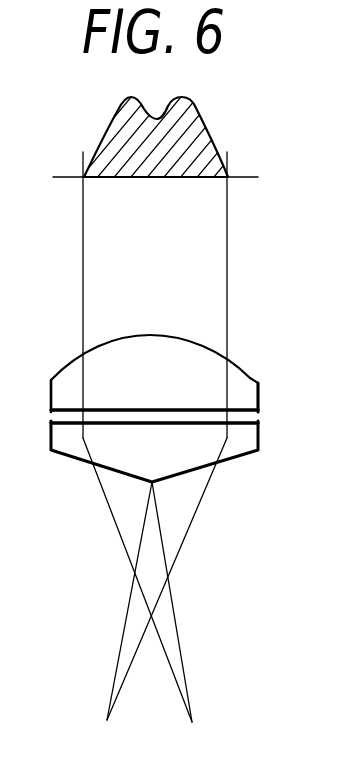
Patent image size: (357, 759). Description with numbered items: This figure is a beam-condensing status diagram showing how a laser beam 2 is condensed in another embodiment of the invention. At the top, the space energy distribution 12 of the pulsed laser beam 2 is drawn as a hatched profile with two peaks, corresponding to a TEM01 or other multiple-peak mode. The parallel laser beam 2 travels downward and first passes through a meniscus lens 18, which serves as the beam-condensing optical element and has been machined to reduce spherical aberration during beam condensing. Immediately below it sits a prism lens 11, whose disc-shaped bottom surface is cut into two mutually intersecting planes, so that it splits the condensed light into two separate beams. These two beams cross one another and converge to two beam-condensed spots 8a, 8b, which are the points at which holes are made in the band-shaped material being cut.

The space energy distribution 12 is at (212, 132).
The laser beam 2 is at (213, 253).
The meniscus lens 18 is at (242, 380).
The prism lens 11 is at (248, 440).
The beam-condensed spot 8a is at (105, 720).
The beam-condensed spot 8b is at (195, 720).